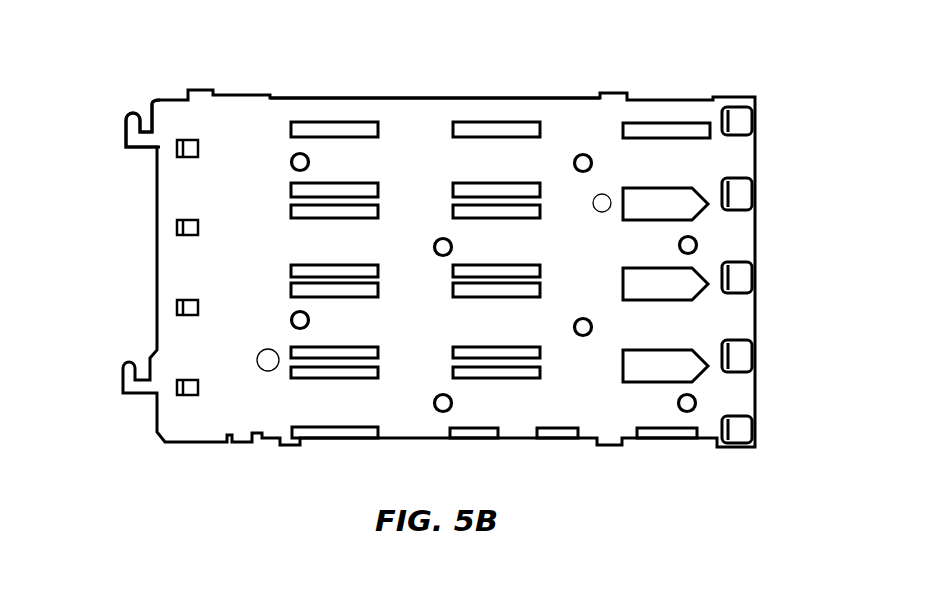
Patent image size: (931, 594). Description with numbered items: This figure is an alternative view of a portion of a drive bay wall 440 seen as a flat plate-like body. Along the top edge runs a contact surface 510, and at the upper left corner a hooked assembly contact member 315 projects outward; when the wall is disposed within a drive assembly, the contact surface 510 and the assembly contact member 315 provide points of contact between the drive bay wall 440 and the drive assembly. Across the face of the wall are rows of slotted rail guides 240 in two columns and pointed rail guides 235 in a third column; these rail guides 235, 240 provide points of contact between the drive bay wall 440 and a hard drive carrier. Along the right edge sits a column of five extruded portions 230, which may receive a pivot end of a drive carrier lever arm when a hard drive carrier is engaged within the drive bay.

The drive bay wall 440 is at (540, 78).
The contact surface 510 is at (497, 93).
The assembly contact member 315 is at (133, 113).
The rail guide 240 is at (328, 130).
The rail guide 235 is at (654, 196).
The extruded portion 230 is at (738, 423).